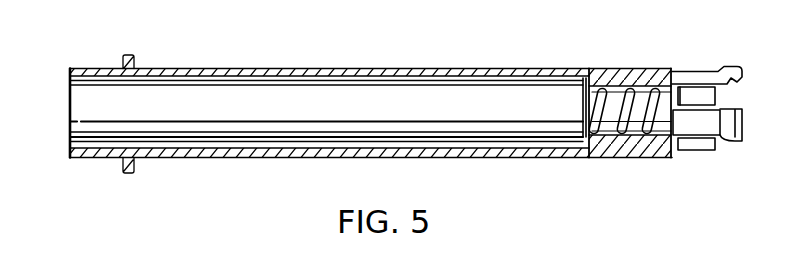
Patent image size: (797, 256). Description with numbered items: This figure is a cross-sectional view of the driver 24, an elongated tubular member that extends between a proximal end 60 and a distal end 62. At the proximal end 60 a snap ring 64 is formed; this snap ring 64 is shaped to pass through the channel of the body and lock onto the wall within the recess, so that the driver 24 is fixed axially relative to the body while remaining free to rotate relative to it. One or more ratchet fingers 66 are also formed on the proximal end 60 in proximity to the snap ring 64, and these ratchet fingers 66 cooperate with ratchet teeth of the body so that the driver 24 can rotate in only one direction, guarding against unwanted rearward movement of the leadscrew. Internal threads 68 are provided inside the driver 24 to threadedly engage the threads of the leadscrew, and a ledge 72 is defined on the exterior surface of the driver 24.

The driver 24 is at (300, 160).
The distal end 62 is at (68, 152).
The ledge 72 is at (131, 55).
The internal threads 68 is at (608, 133).
The proximal end 60 is at (742, 148).
The ratchet fingers 66 is at (697, 152).
The snap ring 64 is at (720, 150).